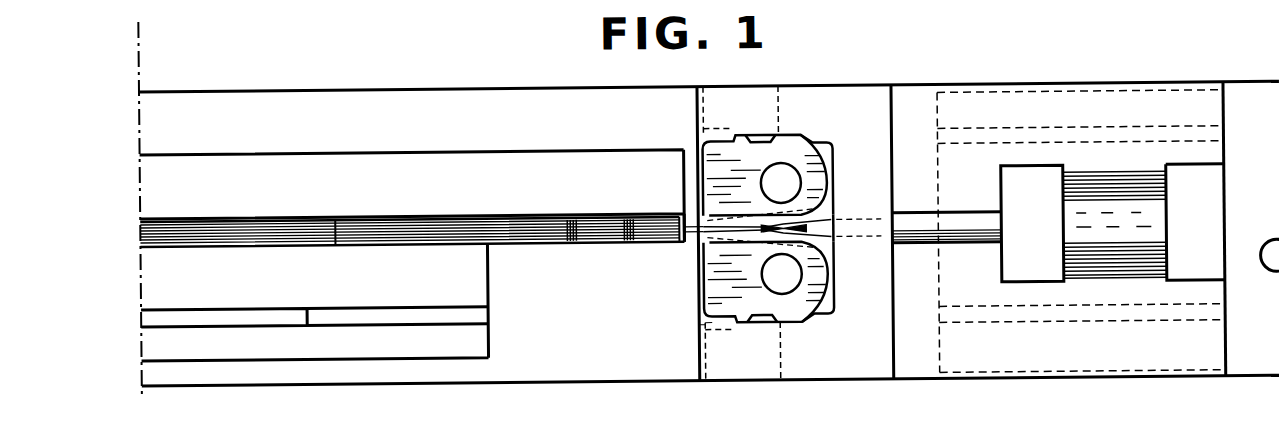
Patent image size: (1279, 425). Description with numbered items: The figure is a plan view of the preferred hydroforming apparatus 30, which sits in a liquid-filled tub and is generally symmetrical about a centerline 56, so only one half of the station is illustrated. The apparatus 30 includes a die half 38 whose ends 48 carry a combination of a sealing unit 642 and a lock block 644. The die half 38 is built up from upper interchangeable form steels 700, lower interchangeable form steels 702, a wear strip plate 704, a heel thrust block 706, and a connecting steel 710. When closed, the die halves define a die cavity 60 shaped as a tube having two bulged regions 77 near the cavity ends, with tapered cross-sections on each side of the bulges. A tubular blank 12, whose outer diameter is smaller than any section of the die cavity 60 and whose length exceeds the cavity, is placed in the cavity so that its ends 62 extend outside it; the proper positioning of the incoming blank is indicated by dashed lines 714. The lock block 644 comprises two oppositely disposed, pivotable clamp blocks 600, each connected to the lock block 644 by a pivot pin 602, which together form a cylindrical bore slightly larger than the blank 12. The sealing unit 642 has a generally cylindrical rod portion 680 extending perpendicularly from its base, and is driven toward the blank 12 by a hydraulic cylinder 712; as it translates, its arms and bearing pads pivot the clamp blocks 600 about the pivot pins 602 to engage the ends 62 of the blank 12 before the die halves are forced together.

The tubular blank 12 is at (371, 240).
The apparatus 30 is at (831, 74).
The die half 38 is at (524, 424).
The ends of the die halves 48 is at (682, 197).
The centerline 56 is at (139, 89).
The die cavity 60 is at (562, 252).
The ends of the blank 62 is at (667, 250).
The bulged regions 77 is at (606, 231).
The clamp block 600 is at (723, 167).
The pivot pin 602 is at (780, 189).
The sealing unit 642 is at (993, 357).
The lock block 644 is at (818, 370).
The rod portion 680 is at (1025, 130).
The upper interchangeable form steels 700 is at (709, 253).
The lower interchangeable form steels 702 is at (304, 238).
The wear strip plate 704 is at (232, 328).
The heel thrust block 706 is at (413, 362).
The connecting steel 710 is at (643, 375).
The hydraulic cylinder 712 is at (1048, 190).
The dashed lines showing blank positioning 714 is at (682, 374).